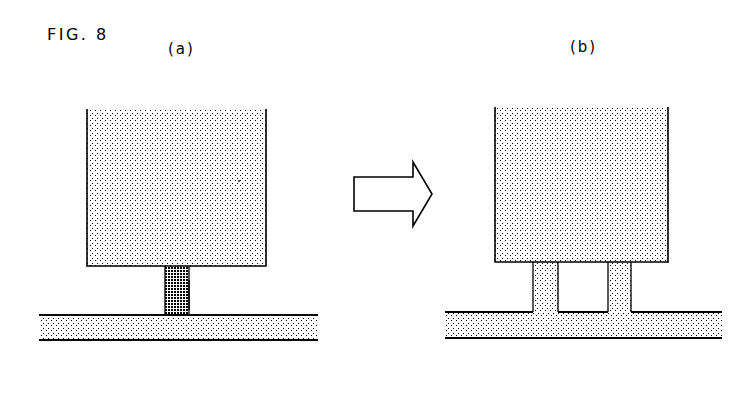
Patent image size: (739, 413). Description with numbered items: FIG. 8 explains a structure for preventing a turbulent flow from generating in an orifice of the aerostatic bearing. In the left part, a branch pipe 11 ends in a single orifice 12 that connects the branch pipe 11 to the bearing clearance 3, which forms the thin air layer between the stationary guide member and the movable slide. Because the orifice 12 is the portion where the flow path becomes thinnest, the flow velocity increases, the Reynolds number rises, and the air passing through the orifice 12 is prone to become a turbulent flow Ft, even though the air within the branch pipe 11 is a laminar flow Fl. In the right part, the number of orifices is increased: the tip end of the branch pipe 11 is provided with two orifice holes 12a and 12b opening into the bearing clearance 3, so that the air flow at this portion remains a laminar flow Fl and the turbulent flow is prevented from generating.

The branch pipe 11 is at (87, 202).
The orifice 12 is at (165, 276).
The orifice hole 12a is at (533, 293).
The orifice hole 12b is at (631, 300).
The bearing clearance 3 is at (190, 342).
The turbulent flow Ft is at (190, 286).
The laminar flow Fl is at (239, 180).